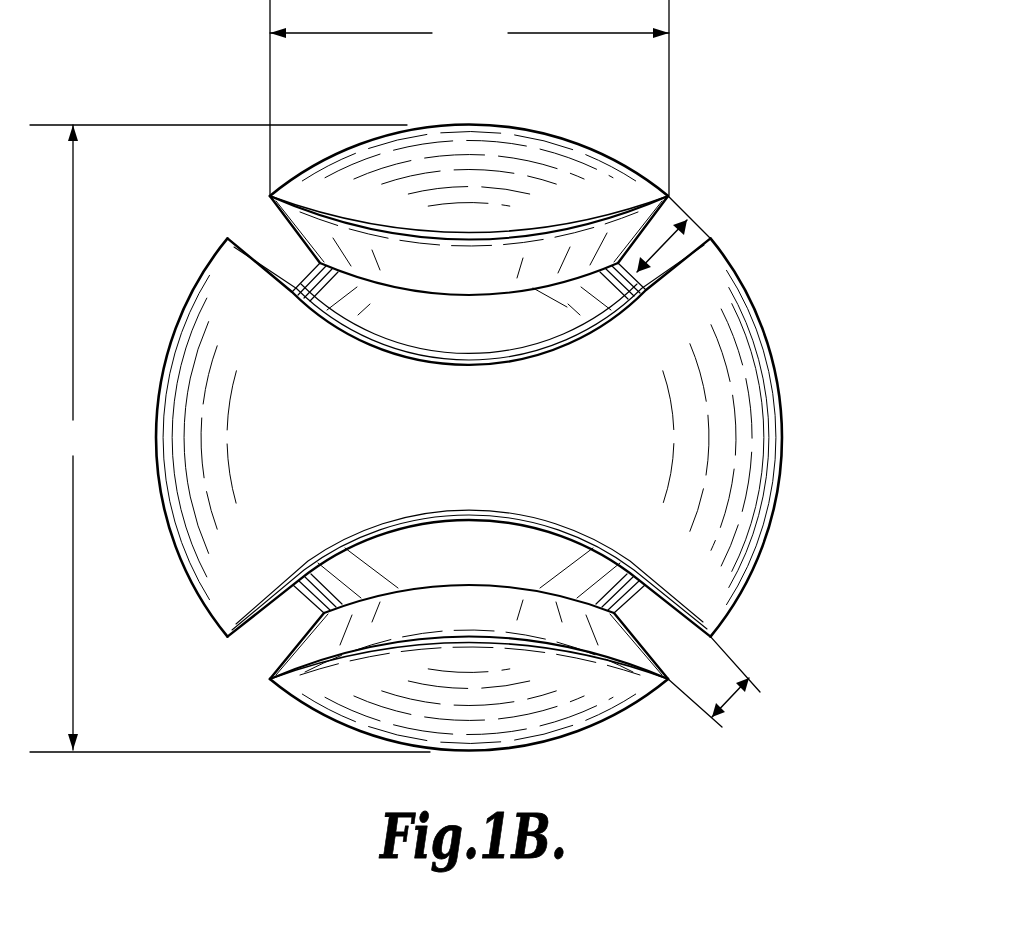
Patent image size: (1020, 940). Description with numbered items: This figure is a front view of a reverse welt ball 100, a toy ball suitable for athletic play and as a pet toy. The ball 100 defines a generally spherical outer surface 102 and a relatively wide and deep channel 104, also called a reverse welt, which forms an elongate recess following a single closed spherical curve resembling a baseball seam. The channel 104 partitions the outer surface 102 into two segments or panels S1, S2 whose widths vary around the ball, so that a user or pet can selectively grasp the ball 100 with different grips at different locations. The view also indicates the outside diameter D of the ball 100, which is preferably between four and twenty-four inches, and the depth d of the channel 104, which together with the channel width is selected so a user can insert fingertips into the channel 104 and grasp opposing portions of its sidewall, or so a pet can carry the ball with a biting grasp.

The reverse welt ball 100 is at (736, 124).
The outer surface 102 is at (774, 346).
The channel 104 is at (272, 234).
The segment S1 is at (780, 438).
The segment S2 is at (476, 148).
The outside diameter D is at (230, 438).
The depth d is at (690, 217).